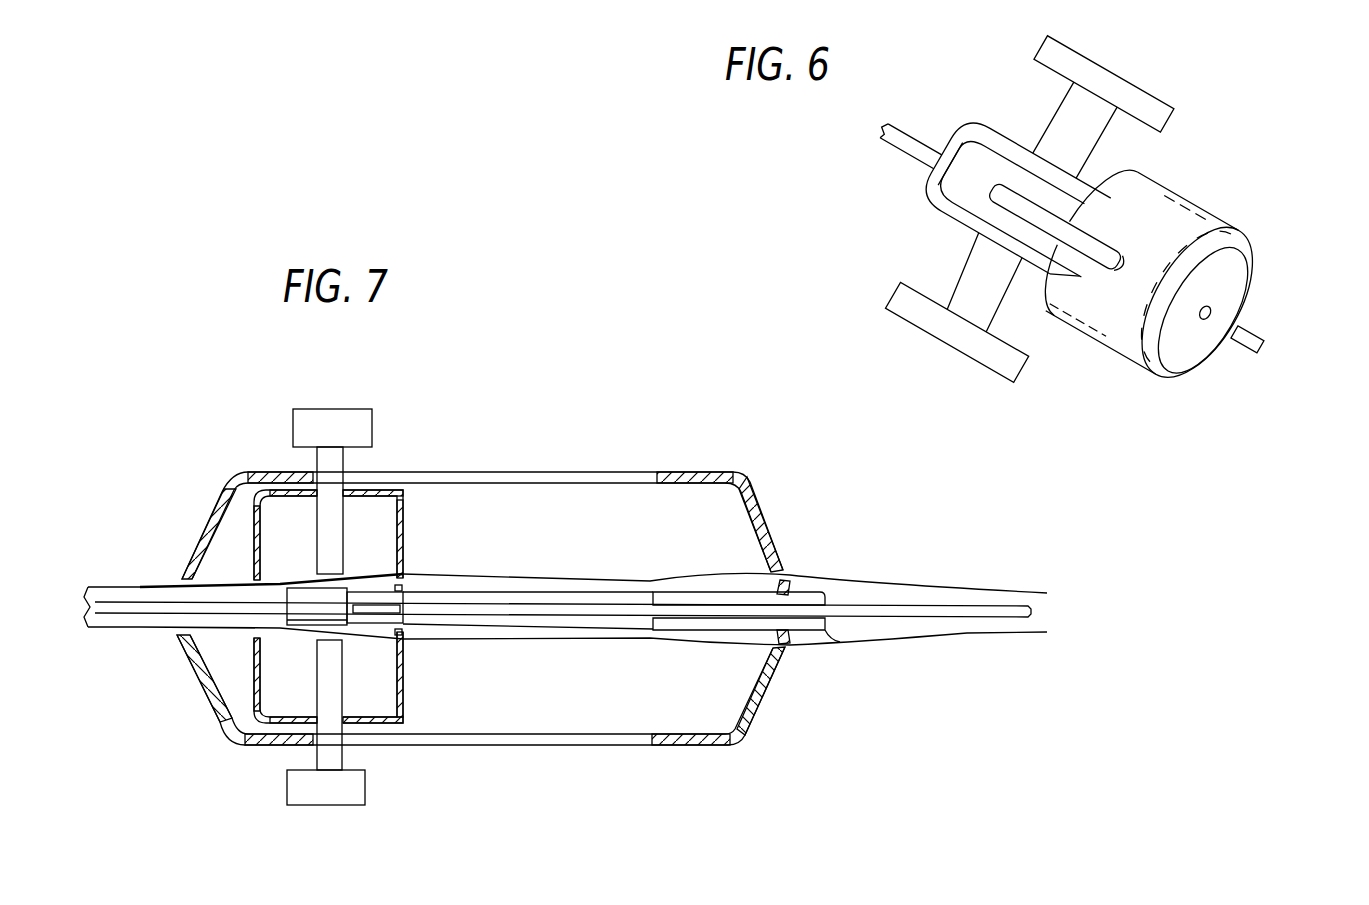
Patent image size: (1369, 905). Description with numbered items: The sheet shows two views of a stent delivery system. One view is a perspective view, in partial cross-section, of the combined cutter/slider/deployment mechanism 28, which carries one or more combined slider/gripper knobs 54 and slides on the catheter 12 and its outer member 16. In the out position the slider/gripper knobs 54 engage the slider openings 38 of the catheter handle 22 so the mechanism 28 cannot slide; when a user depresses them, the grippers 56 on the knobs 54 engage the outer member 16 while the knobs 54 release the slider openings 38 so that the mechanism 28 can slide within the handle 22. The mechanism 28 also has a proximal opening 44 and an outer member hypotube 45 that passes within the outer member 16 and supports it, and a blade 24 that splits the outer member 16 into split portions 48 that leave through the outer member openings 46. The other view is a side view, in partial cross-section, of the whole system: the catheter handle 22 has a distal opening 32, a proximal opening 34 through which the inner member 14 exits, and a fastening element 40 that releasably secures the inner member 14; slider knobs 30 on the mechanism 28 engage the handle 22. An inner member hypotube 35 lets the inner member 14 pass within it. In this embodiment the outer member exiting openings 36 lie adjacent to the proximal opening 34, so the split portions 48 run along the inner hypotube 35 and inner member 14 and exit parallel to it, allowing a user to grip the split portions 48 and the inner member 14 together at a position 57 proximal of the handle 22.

In FIG. 7, the catheter 12 is at (167, 583).
In FIG. 7, the inner member 14 is at (120, 593).
In FIG. 6, the outer member 16 is at (905, 130).
In FIG. 7, the outer member 16 is at (123, 630).
In FIG. 7, the catheter handle 22 is at (515, 473).
In FIG. 6, the blade 24 is at (1100, 217).
In FIG. 7, the blade 24 is at (377, 638).
In FIG. 6, the combined cutter/slider/deployment mechanism 28 is at (1250, 110).
In FIG. 7, the combined cutter/slider/deployment mechanism 28 is at (255, 690).
In FIG. 7, the slider knob 30 is at (323, 410).
In FIG. 7, the distal opening 32 is at (177, 630).
In FIG. 7, the proximal opening 34 is at (830, 603).
In FIG. 7, the inner member hypotube 35 is at (640, 629).
In FIG. 7, the outer member exiting opening 36 is at (788, 574).
In FIG. 7, the slider opening 38 is at (627, 478).
In FIG. 7, the fastening element 40 is at (820, 640).
In FIG. 6, the proximal opening 44 is at (1208, 322).
In FIG. 7, the outer member hypotube 45 is at (302, 637).
In FIG. 6, the outer member opening 46 is at (970, 203).
In FIG. 7, the outer member opening 46 is at (404, 578).
In FIG. 6, the split portion 48 is at (1080, 256).
In FIG. 7, the split portion 48 is at (518, 580).
In FIG. 6, the combined slider/gripper knob 54 is at (1093, 62).
In FIG. 6, the gripper 56 is at (1025, 190).
In FIG. 7, the position 57 is at (933, 545).